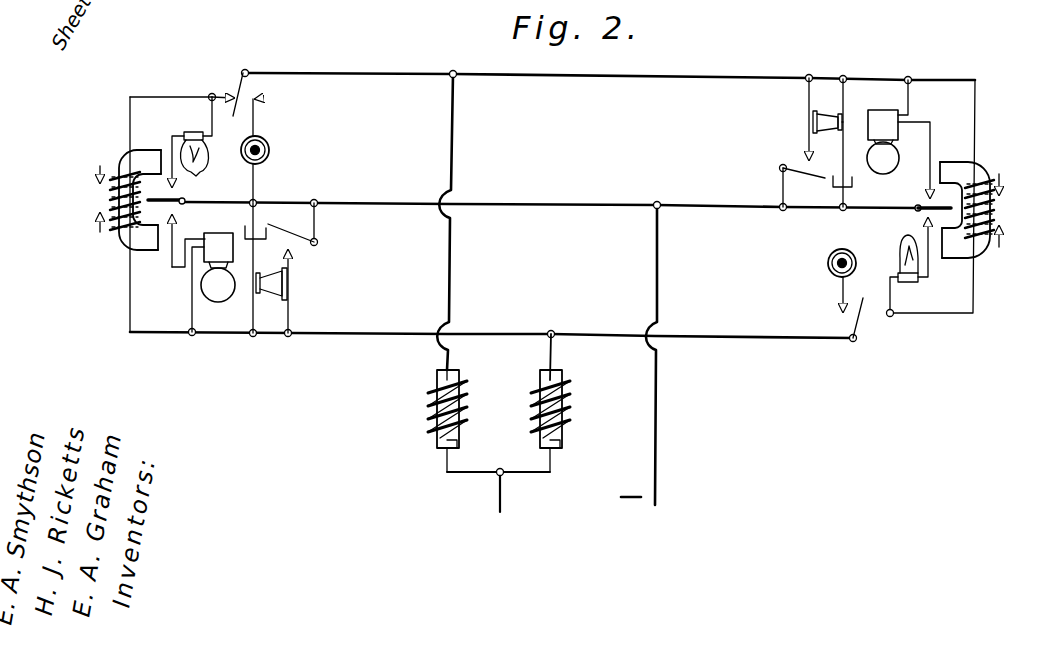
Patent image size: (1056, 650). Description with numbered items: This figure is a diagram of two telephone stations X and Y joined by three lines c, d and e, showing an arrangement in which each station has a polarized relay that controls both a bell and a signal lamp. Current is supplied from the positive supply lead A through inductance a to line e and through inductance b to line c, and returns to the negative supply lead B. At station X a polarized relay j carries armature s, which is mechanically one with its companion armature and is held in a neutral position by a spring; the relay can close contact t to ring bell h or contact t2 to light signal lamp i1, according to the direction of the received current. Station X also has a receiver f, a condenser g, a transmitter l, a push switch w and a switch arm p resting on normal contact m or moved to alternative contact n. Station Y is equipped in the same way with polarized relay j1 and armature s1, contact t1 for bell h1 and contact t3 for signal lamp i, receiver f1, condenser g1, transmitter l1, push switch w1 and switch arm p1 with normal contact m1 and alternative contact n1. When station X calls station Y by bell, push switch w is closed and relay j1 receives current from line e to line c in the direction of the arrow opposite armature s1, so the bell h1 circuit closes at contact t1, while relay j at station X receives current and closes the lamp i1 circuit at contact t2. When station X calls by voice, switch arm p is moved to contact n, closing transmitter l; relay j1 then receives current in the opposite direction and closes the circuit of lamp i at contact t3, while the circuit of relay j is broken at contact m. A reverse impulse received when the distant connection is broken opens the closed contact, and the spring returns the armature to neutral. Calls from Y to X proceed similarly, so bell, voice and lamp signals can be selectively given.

The station X is at (171, 192).
The station Y is at (932, 178).
The line e is at (545, 74).
The line d is at (533, 206).
The line c is at (535, 336).
The inductance a is at (433, 421).
The inductance b is at (560, 403).
The positive supply lead A is at (498, 491).
The negative supply lead B is at (652, 355).
The switch arm p is at (242, 71).
The normal contact m is at (237, 101).
The alternative contact n is at (262, 98).
The transmitter l is at (260, 169).
The signal lamp i1 is at (199, 142).
The relay contact t2 is at (169, 184).
The polarized relay j is at (129, 209).
The relay armature s is at (172, 212).
The relay contact t is at (170, 214).
The bell h is at (213, 282).
The condenser g is at (260, 230).
The push switch w is at (314, 236).
The receiver f is at (276, 289).
The receiver f1 is at (831, 128).
The push switch w1 is at (803, 186).
The condenser g1 is at (860, 189).
The bell h1 is at (887, 127).
The relay contact t1 is at (928, 196).
The relay armature s1 is at (936, 246).
The polarized relay j1 is at (971, 220).
The transmitter l1 is at (831, 263).
The alternative contact n1 is at (840, 312).
The signal lamp i is at (898, 268).
The relay contact t3 is at (915, 245).
The switch arm p1 is at (850, 340).
The normal contact m1 is at (866, 313).